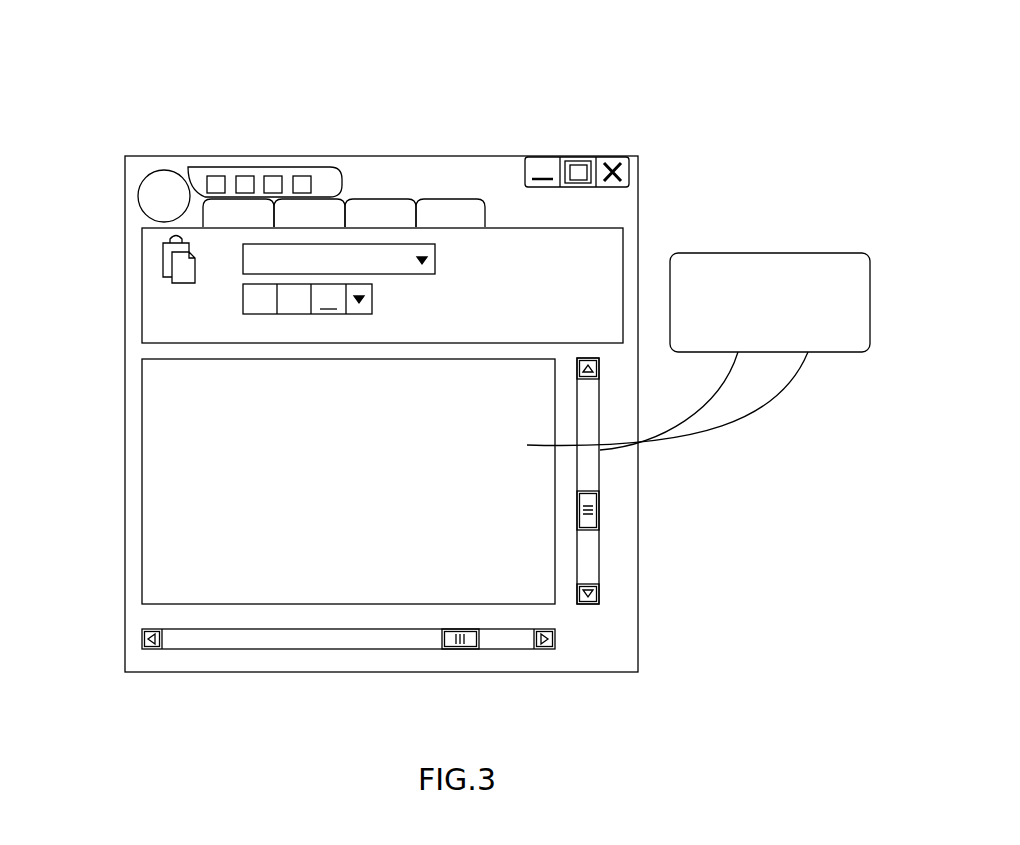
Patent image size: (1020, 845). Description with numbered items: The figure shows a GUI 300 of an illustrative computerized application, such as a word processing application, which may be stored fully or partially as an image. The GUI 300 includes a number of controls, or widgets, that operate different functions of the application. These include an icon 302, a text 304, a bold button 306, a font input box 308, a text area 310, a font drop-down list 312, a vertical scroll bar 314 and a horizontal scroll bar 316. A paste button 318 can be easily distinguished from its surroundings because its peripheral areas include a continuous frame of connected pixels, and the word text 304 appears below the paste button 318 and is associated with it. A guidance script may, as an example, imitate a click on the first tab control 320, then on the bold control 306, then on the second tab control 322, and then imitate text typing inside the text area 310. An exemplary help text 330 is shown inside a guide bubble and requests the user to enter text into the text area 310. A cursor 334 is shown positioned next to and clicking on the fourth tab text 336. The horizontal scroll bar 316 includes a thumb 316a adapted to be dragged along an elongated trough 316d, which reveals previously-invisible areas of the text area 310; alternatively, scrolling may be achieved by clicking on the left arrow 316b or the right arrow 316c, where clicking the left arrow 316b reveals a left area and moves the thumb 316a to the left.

The GUI 300 is at (636, 70).
The icon 302 is at (140, 185).
The text 304 is at (152, 293).
The bold button 306 is at (243, 296).
The font input box 308 is at (308, 259).
The text area 310 is at (182, 405).
The font drop-down list 312 is at (447, 257).
The vertical scroll bar 314 is at (606, 512).
The horizontal scroll bar 316 is at (374, 688).
The thumb 316a is at (444, 641).
The left arrow 316b is at (146, 650).
The right arrow 316c is at (548, 650).
The elongated trough 316d is at (250, 638).
The paste button 318 is at (162, 252).
The tab 1 control 320 is at (140, 221).
The tab 2 control 322 is at (338, 197).
The help text 330 is at (730, 277).
The cursor 334 is at (496, 211).
The tab 4 text 336 is at (447, 199).